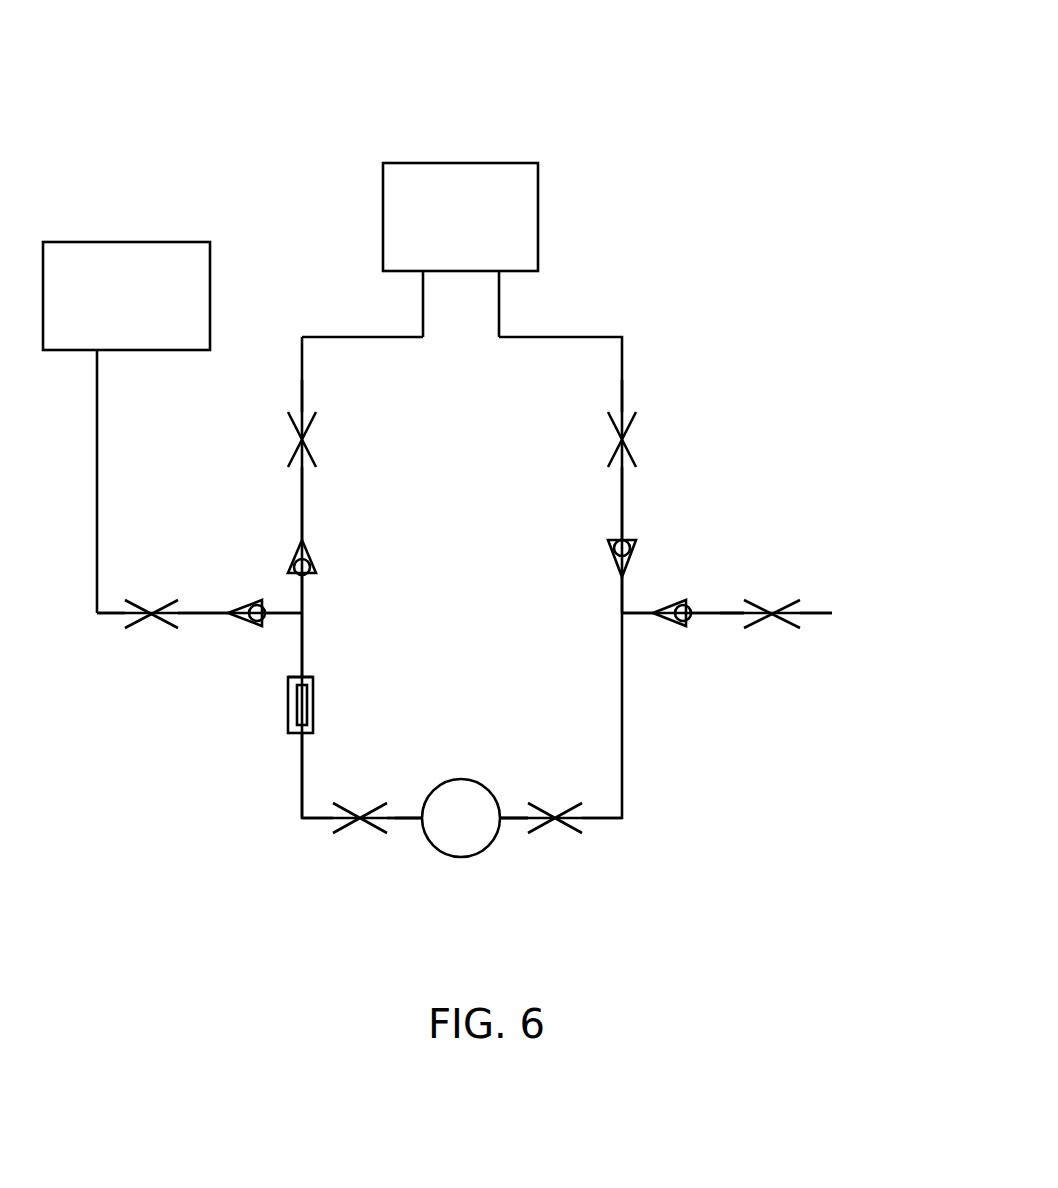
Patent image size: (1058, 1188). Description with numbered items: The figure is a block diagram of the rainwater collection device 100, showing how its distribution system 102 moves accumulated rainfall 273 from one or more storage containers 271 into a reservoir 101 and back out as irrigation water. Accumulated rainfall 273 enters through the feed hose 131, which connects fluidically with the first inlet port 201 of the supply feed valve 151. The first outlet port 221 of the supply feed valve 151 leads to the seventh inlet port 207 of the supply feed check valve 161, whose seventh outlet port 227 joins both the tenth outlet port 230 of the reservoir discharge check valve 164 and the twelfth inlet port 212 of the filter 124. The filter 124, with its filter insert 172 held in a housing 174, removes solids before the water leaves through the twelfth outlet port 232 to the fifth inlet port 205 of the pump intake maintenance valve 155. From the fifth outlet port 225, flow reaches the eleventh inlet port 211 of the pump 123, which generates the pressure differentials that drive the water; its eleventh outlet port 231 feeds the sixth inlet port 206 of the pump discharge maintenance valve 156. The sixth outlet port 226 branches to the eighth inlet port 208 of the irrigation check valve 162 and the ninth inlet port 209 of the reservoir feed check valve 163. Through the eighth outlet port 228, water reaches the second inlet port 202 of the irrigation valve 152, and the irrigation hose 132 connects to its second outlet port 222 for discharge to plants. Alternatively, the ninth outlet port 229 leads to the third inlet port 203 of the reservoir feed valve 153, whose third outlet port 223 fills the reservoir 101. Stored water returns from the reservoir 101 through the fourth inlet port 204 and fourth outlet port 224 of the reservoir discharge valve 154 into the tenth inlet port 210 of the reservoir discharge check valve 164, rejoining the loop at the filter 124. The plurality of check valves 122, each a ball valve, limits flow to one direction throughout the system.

The rainwater collection device 100 is at (246, 100).
The reservoir 101 is at (538, 218).
The distribution system 102 is at (132, 820).
The plurality of check valves 122 is at (677, 603).
The pump 123 is at (457, 857).
The filter 124 is at (287, 722).
The feed hose 131 is at (97, 467).
The irrigation hose 132 is at (815, 618).
The supply feed valve 151 is at (155, 610).
The irrigation valve 152 is at (773, 608).
The reservoir feed valve 153 is at (628, 433).
The reservoir discharge valve 154 is at (300, 433).
The pump intake maintenance valve 155 is at (350, 825).
The pump discharge maintenance valve 156 is at (567, 823).
The supply feed check valve 161 is at (258, 600).
The irrigation check valve 162 is at (678, 600).
The reservoir feed check valve 163 is at (615, 552).
The reservoir discharge check valve 164 is at (290, 563).
The filter insert 172 is at (307, 707).
The filter housing 174 is at (313, 683).
The first inlet port 201 is at (120, 615).
The second inlet port 202 is at (738, 617).
The third inlet port 203 is at (620, 476).
The fourth inlet port 204 is at (305, 402).
The fifth inlet port 205 is at (325, 820).
The sixth inlet port 206 is at (528, 818).
The seventh inlet port 207 is at (213, 615).
The eighth inlet port 208 is at (643, 617).
The ninth inlet port 209 is at (620, 593).
The tenth inlet port 210 is at (305, 522).
The eleventh inlet port 211 is at (408, 813).
The twelfth inlet port 212 is at (305, 647).
The first outlet port 221 is at (185, 615).
The second outlet port 222 is at (800, 610).
The third outlet port 223 is at (620, 402).
The fourth outlet port 224 is at (305, 477).
The fifth outlet port 225 is at (393, 827).
The sixth outlet port 226 is at (585, 820).
The seventh outlet port 227 is at (277, 615).
The eighth outlet port 228 is at (703, 617).
The ninth outlet port 229 is at (620, 520).
The tenth outlet port 230 is at (305, 587).
The eleventh outlet port 231 is at (507, 813).
The twelfth outlet port 232 is at (305, 757).
The one or more storage containers 271 is at (125, 240).
The accumulated rainfall 273 is at (198, 308).